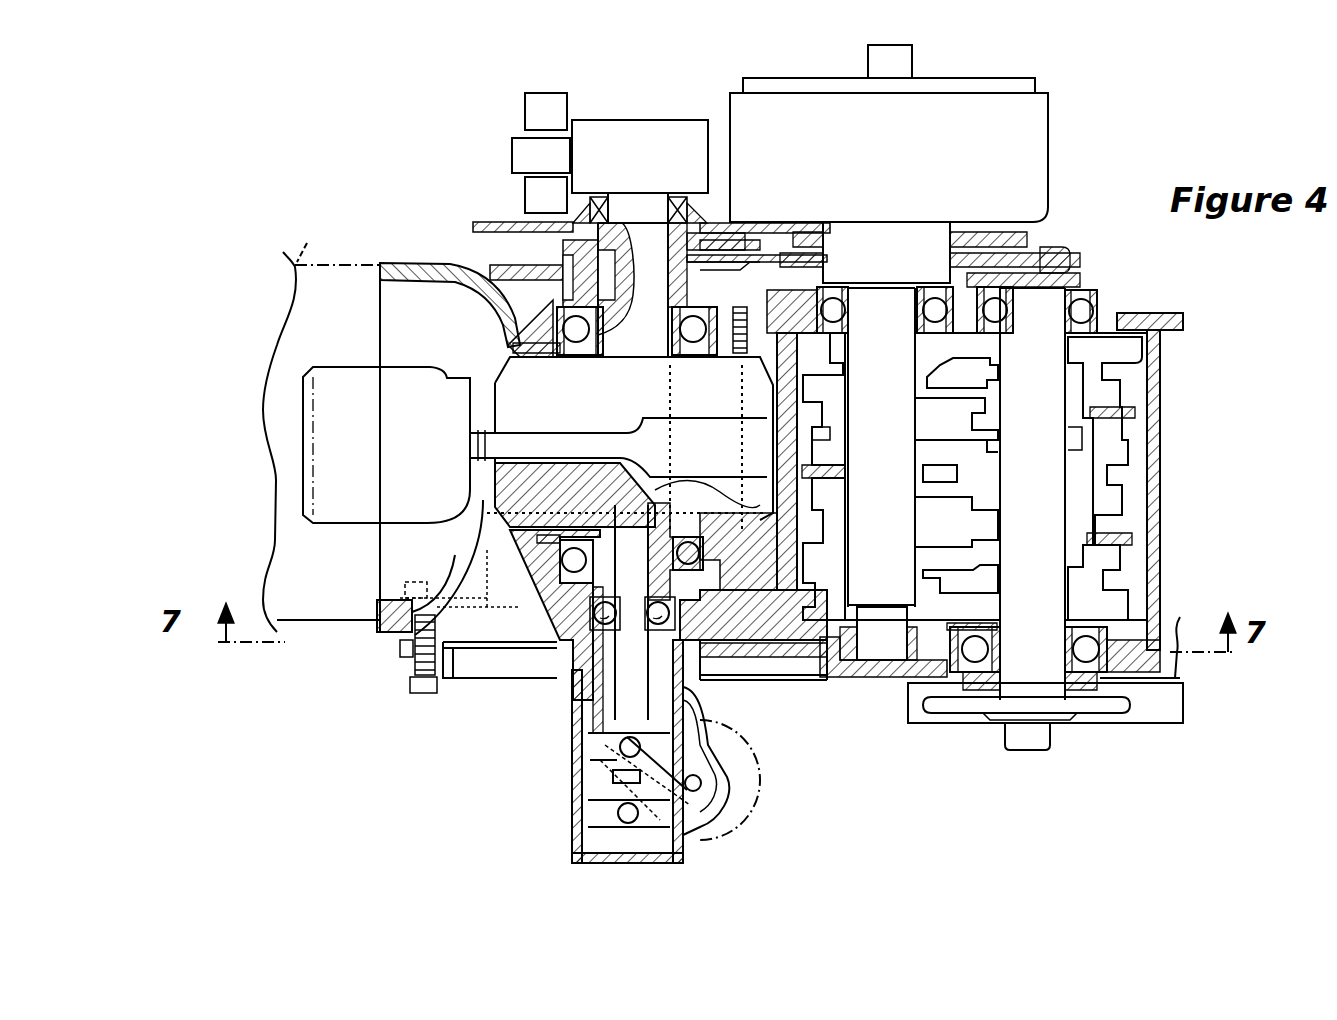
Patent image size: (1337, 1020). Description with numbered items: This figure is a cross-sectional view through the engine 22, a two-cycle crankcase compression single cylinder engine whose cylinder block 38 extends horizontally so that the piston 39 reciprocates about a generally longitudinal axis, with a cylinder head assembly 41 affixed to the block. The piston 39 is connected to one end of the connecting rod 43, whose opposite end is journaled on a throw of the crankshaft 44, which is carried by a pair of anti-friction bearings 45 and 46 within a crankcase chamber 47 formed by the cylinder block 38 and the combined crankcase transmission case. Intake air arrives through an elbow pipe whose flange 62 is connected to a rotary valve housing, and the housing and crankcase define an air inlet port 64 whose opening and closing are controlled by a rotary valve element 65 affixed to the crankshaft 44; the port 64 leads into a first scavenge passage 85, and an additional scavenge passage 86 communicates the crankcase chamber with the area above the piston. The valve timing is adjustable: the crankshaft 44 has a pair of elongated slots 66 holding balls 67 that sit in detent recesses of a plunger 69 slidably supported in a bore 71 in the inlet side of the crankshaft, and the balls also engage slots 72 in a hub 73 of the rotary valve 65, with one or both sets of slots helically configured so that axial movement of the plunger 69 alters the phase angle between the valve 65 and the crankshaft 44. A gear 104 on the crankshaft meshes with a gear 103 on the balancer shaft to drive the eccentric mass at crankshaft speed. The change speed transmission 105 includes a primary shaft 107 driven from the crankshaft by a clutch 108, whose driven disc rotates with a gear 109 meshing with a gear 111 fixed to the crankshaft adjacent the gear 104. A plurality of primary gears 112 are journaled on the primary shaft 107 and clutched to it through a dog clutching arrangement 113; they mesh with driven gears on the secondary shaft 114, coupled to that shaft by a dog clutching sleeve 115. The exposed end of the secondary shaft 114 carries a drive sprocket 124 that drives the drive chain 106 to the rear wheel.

The engine 22 is at (367, 657).
The cylinder block 38 is at (403, 263).
The piston 39 is at (388, 365).
The cylinder head assembly 41 is at (307, 250).
The connecting rod 43 is at (560, 433).
The crankshaft 44 is at (640, 240).
The anti-friction bearing 45 is at (460, 670).
The anti-friction bearing 46 is at (537, 308).
The crankcase chamber 47 is at (797, 291).
The flange 62 is at (835, 673).
The air inlet port 64 is at (452, 630).
The rotary valve element 65 is at (773, 658).
The elongated slots 66 is at (573, 697).
The balls 67 is at (629, 590).
The plunger 69 is at (700, 693).
The bore 71 is at (627, 735).
The slots 72 is at (590, 655).
The hub 73 is at (557, 628).
The first scavenge passage 85 is at (527, 590).
The scavenge passage 86 is at (420, 321).
The gear 103 is at (487, 268).
The gear 104 is at (583, 280).
The change speed transmission 105 is at (1137, 385).
The drive chain 106 is at (1145, 725).
The primary shaft 107 is at (897, 428).
The clutch 108 is at (923, 184).
The gear 109 is at (767, 255).
The gear 111 is at (727, 232).
The primary gears 112 is at (820, 388).
The dog clutching arrangement 113 is at (835, 448).
The secondary shaft 114 is at (1057, 446).
The dog clutching sleeve 115 is at (1110, 453).
The drive sprocket 124 is at (965, 708).